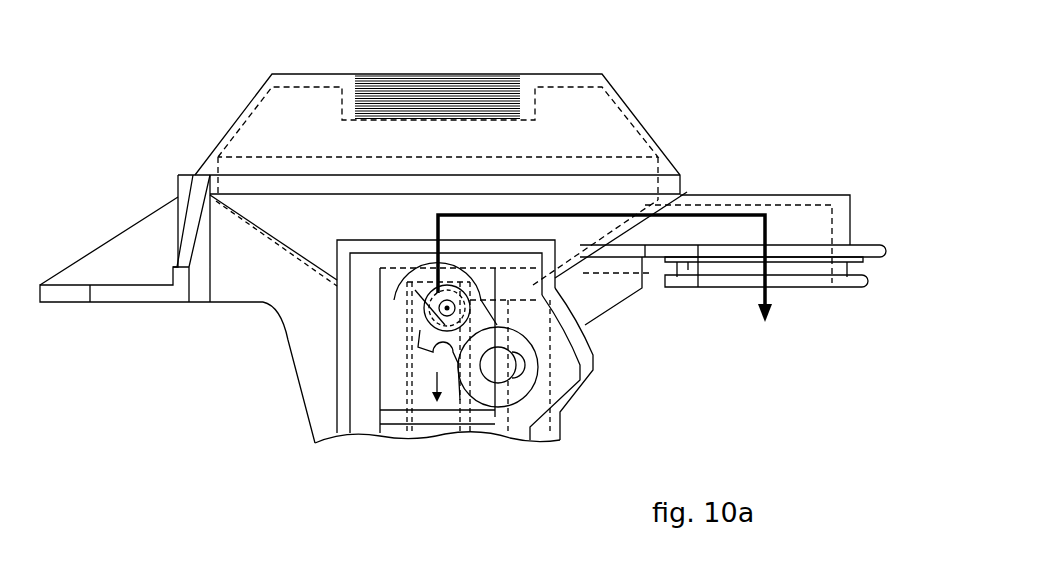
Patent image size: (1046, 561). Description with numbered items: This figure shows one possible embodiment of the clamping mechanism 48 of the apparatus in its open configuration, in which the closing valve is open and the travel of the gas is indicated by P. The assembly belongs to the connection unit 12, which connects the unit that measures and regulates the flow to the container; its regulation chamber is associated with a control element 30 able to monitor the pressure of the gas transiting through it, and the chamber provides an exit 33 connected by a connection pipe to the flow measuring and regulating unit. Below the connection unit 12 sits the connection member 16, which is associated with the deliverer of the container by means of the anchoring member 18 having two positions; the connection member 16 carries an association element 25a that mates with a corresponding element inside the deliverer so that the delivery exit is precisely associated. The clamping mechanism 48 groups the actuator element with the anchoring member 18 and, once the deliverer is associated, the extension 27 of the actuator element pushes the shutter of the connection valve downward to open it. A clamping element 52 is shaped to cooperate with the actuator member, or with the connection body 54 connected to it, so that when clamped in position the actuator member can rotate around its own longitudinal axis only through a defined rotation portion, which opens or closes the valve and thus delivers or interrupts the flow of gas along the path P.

The connection unit 12 is at (230, 89).
The control element 30 is at (626, 88).
The anchoring member 18 is at (392, 342).
The connection member 16 is at (413, 428).
The connection body 54 is at (425, 268).
The association element 25a is at (427, 363).
The clamping element 52 is at (518, 343).
The clamping mechanism 48 is at (566, 373).
The exit 33 is at (843, 268).
The extension 27 is at (470, 306).
The travel of the gas P is at (760, 303).